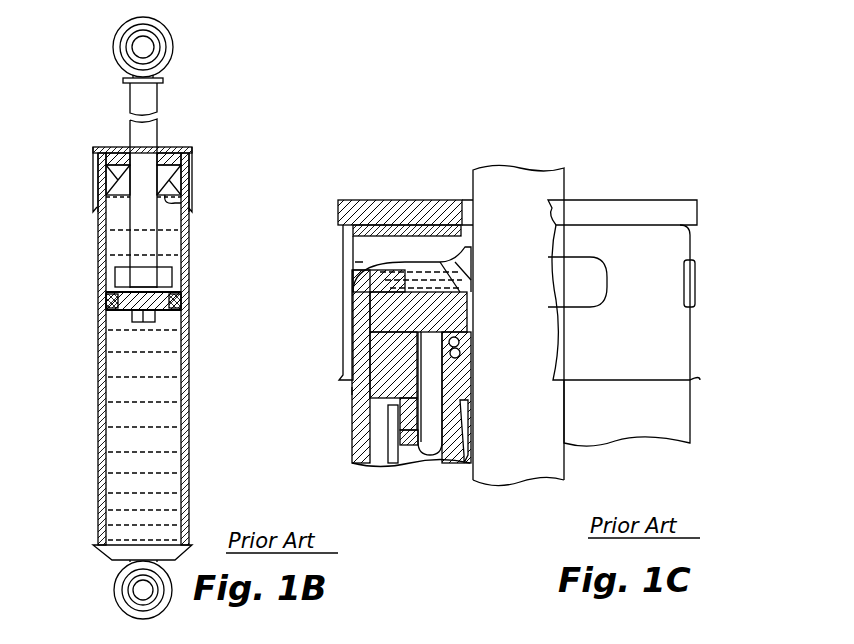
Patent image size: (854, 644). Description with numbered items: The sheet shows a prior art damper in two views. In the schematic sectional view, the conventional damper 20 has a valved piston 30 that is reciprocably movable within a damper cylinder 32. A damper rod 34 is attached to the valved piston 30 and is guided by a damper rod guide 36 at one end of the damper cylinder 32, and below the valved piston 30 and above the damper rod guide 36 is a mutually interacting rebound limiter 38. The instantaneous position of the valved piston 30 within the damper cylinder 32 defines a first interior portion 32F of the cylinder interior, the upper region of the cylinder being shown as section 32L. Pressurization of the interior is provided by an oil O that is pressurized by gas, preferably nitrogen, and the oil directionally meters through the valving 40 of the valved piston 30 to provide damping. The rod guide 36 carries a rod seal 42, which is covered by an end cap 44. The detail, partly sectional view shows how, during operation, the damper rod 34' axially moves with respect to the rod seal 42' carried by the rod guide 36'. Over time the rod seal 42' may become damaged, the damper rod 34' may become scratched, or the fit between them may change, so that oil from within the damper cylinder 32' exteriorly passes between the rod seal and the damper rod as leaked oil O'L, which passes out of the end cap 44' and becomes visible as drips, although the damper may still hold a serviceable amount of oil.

In FIG. 1B, the damper 20 is at (94, 396).
In FIG. 1B, the valved piston 30 is at (175, 312).
In FIG. 1B, the damper cylinder 32 is at (119, 356).
In FIG. 1B, the cylinder upper section 32L is at (118, 246).
In FIG. 1B, the first interior portion 32F is at (112, 461).
In FIG. 1B, the damper rod 34 is at (102, 185).
In FIG. 1B, the damper rod guide 36 is at (127, 143).
In FIG. 1B, the rebound limiter 38 is at (166, 268).
In FIG. 1B, the valving 40 is at (135, 317).
In FIG. 1B, the rod seal 42 is at (166, 152).
In FIG. 1B, the end cap 44 is at (175, 179).
In FIG. 1B, the oil O is at (143, 392).
In FIG. 1C, the damper rod 34' is at (550, 324).
In FIG. 1C, the rod guide 36' is at (384, 293).
In FIG. 1C, the rod seal 42' is at (446, 371).
In FIG. 1C, the end cap 44' is at (315, 302).
In FIG. 1C, the damper cylinder 32' is at (376, 368).
In FIG. 1C, the leaked oil O'L is at (323, 333).